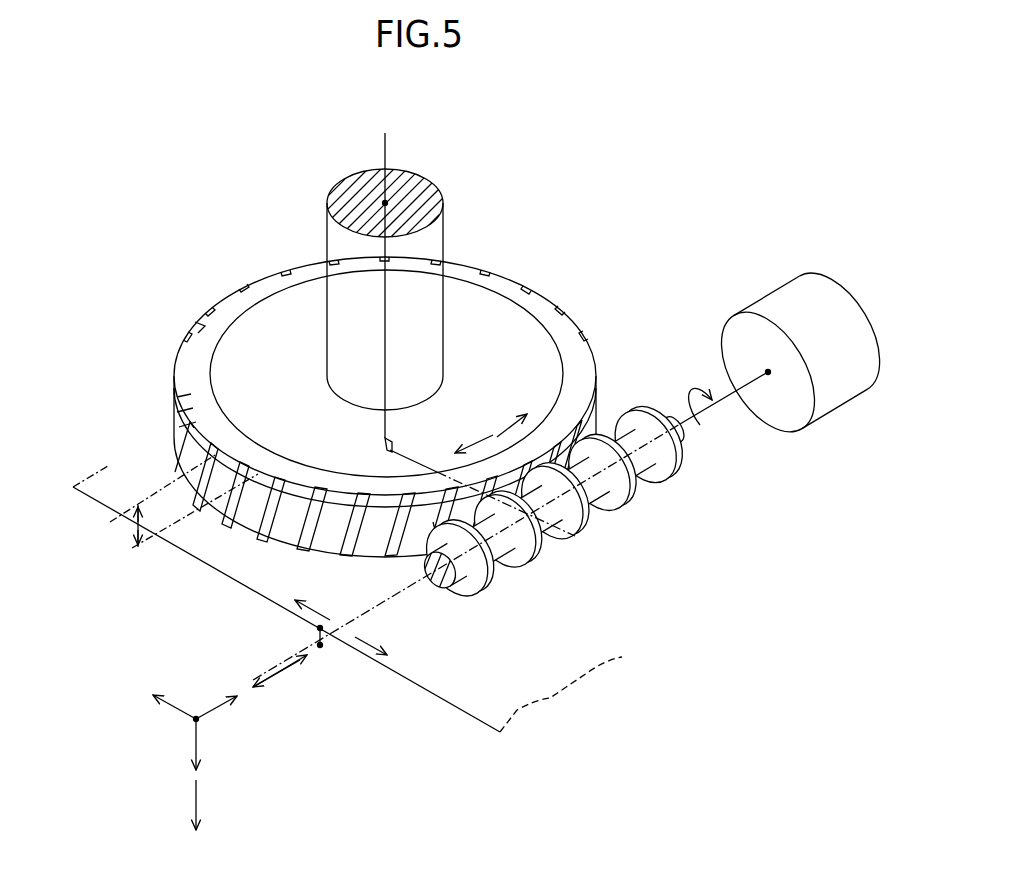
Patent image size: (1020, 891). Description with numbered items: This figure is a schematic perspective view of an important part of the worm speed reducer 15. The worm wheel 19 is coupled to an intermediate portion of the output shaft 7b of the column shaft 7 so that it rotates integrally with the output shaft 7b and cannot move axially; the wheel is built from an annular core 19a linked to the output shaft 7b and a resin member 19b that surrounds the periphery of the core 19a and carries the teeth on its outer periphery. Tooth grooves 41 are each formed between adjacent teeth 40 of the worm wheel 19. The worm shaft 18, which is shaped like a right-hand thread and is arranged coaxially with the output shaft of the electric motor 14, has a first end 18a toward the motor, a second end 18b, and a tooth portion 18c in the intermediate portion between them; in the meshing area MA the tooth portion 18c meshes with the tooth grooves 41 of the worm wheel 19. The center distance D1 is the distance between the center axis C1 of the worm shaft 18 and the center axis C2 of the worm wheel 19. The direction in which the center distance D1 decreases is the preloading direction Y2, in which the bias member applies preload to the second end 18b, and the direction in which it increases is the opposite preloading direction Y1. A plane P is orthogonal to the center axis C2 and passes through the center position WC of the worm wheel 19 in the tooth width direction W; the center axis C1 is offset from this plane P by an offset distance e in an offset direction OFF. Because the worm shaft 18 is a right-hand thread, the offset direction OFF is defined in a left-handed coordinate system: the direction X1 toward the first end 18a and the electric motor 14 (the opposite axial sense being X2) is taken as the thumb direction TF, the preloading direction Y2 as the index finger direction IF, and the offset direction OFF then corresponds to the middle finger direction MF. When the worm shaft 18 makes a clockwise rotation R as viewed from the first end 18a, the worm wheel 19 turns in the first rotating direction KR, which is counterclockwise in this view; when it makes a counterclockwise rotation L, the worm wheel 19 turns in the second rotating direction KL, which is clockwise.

The column shaft 7 is at (409, 289).
The output shaft 7b is at (423, 247).
The electric motor 14 is at (830, 408).
The worm speed reducer 15 is at (437, 420).
The worm shaft 18 is at (553, 506).
The first end 18a is at (669, 431).
The second end 18b is at (460, 582).
The tooth portion 18c is at (554, 501).
The worm wheel 19 is at (403, 413).
The annular core 19a is at (243, 305).
The resin member 19b is at (292, 310).
The teeth 40 is at (210, 490).
The tooth grooves 41 is at (352, 530).
The center axis of the worm shaft C1 is at (415, 592).
The center axis of the worm wheel C2 is at (387, 152).
The center distance D1 is at (440, 470).
The plane P is at (120, 480).
The tooth width direction W is at (140, 505).
The center position WC is at (138, 527).
The counterclockwise rotation L is at (705, 400).
The clockwise rotation R is at (707, 438).
The first rotating direction KR is at (506, 430).
The second rotating direction KL is at (473, 444).
The meshing area MA is at (548, 420).
The direction toward the first end X1 is at (287, 662).
The direction X2 is at (270, 680).
The opposite preloading direction Y1 is at (360, 637).
The preloading direction Y2 is at (320, 616).
The offset distance e is at (318, 636).
The thumb direction TF is at (215, 712).
The index finger direction IF is at (180, 718).
The middle finger direction MF is at (200, 740).
The offset direction OFF is at (198, 792).